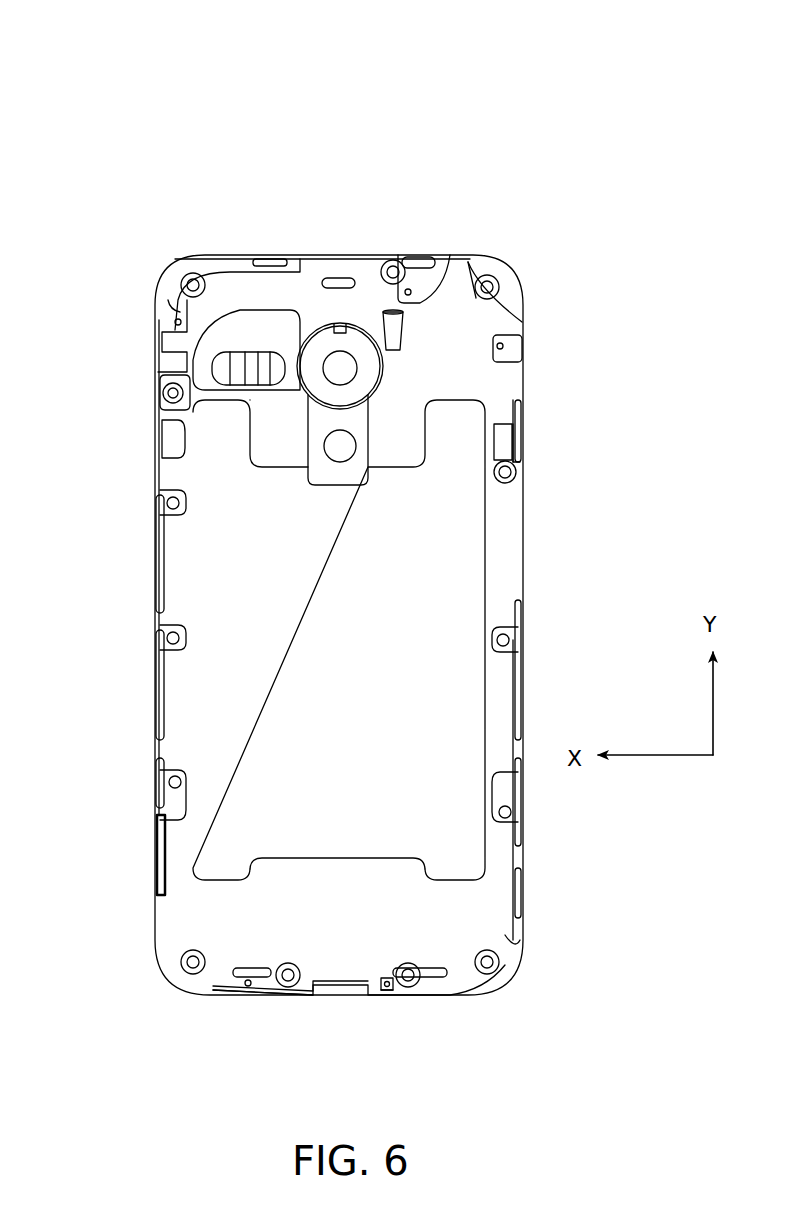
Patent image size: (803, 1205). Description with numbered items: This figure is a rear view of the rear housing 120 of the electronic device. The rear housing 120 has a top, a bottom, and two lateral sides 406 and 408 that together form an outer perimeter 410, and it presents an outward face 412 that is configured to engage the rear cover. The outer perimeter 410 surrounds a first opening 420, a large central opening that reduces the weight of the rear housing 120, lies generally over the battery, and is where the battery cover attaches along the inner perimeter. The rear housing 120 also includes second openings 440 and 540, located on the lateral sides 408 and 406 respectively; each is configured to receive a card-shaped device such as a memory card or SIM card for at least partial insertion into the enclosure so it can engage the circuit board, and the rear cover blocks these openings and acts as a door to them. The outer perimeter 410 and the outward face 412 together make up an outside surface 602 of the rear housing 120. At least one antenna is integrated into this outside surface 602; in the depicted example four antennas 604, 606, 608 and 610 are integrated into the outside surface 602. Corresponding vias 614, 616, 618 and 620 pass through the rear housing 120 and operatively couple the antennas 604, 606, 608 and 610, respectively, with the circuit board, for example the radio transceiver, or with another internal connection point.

The rear housing 120 is at (626, 58).
The lateral side 406 is at (128, 557).
The lateral side 408 is at (548, 583).
The outer perimeter 410 is at (535, 520).
The outward face 412 is at (318, 900).
The first opening 420 is at (253, 710).
The second opening 440 is at (548, 428).
The second opening 540 is at (128, 848).
The outside surface 602 is at (507, 936).
The antenna 604 is at (175, 322).
The antenna 606 is at (441, 262).
The antenna 608 is at (510, 356).
The antenna 610 is at (386, 992).
The via 614 is at (178, 311).
The via 616 is at (406, 290).
The via 618 is at (502, 344).
The via 620 is at (396, 985).